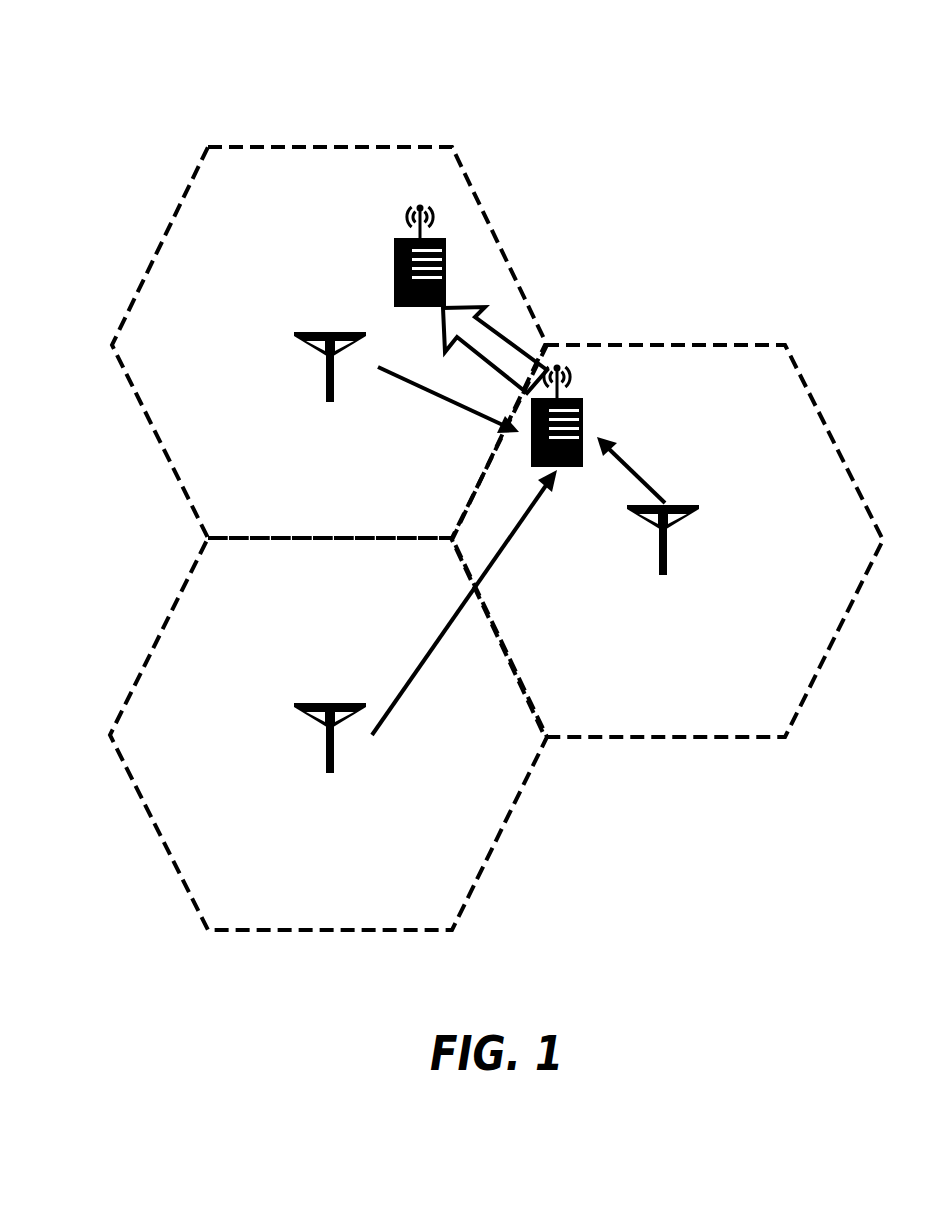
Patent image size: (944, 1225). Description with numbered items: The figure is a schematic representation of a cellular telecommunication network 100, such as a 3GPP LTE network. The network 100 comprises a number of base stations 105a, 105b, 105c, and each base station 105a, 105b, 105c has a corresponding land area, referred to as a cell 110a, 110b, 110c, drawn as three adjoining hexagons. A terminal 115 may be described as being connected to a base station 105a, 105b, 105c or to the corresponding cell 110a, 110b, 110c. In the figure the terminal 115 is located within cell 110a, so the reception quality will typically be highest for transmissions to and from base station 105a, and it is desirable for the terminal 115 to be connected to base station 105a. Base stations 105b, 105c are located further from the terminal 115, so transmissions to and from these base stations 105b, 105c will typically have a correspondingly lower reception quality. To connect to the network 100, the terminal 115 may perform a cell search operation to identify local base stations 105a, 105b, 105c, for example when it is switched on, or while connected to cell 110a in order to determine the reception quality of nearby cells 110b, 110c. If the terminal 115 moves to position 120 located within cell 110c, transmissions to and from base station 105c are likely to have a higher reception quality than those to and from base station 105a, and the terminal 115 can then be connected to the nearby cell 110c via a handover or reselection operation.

The cellular telecommunication network 100 is at (197, 58).
The base station 105a is at (666, 566).
The base station 105b is at (331, 762).
The base station 105c is at (332, 388).
The cell 110a is at (700, 391).
The cell 110b is at (370, 592).
The cell 110c is at (370, 197).
The terminal 115 is at (566, 478).
The position 120 is at (491, 226).